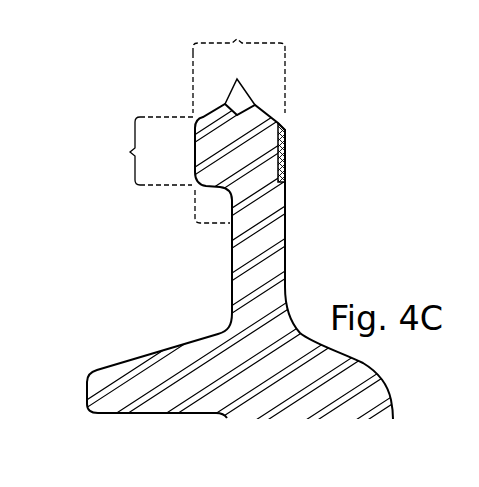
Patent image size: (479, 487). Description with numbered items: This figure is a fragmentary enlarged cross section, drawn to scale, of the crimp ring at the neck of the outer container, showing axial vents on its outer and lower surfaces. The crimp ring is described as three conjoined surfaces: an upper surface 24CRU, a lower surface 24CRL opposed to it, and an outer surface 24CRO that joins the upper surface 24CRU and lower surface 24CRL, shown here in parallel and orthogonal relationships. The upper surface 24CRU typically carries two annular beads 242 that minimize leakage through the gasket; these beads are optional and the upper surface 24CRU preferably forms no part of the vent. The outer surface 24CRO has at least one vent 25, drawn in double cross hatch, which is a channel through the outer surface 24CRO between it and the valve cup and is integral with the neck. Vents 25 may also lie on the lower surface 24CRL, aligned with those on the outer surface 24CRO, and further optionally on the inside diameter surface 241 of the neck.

The upper surface 24CRU is at (239, 62).
The annular beads 242 is at (238, 79).
The vent 25 is at (286, 143).
The outer surface 24CRO is at (119, 151).
The lower surface 24CRL is at (212, 224).
The inside diameter surface 241 is at (285, 287).